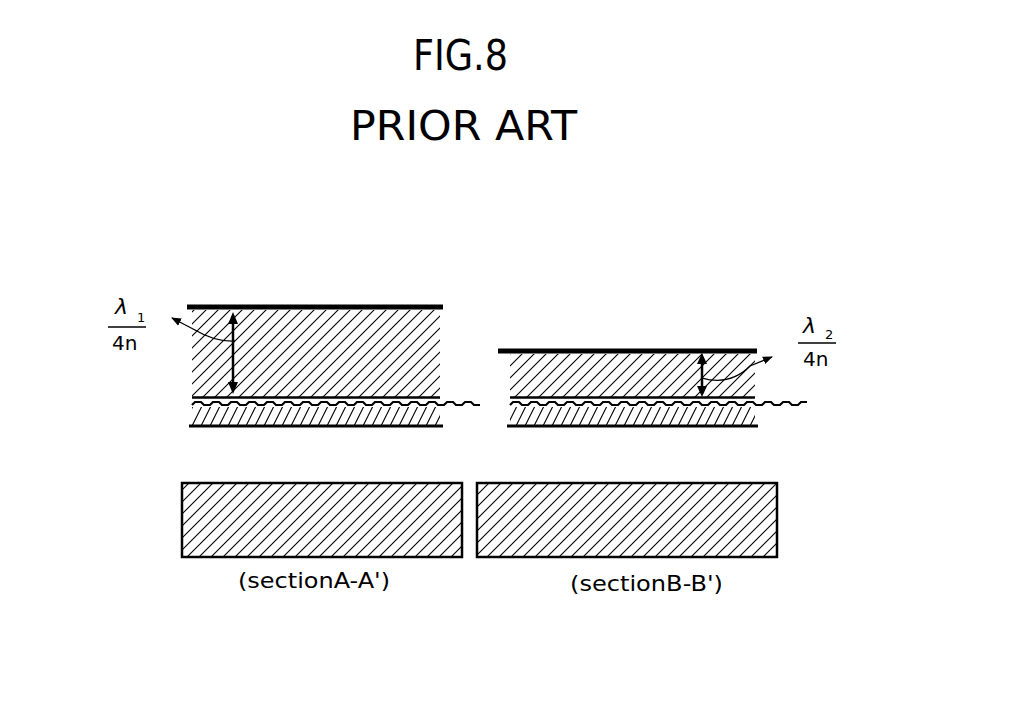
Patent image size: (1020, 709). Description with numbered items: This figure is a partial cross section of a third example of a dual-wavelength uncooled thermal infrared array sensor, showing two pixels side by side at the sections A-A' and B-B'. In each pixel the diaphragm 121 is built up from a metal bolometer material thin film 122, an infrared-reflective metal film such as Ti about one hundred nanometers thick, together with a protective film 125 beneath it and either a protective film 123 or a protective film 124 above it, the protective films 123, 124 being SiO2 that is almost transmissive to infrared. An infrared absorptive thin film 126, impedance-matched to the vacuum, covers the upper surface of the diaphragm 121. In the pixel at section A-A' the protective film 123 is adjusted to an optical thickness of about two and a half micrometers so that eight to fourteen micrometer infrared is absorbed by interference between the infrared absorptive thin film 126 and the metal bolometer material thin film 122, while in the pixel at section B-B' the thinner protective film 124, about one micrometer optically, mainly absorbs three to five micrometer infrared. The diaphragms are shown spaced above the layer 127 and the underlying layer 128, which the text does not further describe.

The diaphragm 121 is at (483, 311).
The metal bolometer material thin film 122 is at (280, 396).
The protective film 123 is at (252, 344).
The protective film 124 is at (575, 374).
The protective film 125 is at (310, 412).
The infrared absorptive thin film 126 is at (228, 305).
The gap / spacer layer 127 is at (180, 482).
The substrate 128 is at (777, 515).